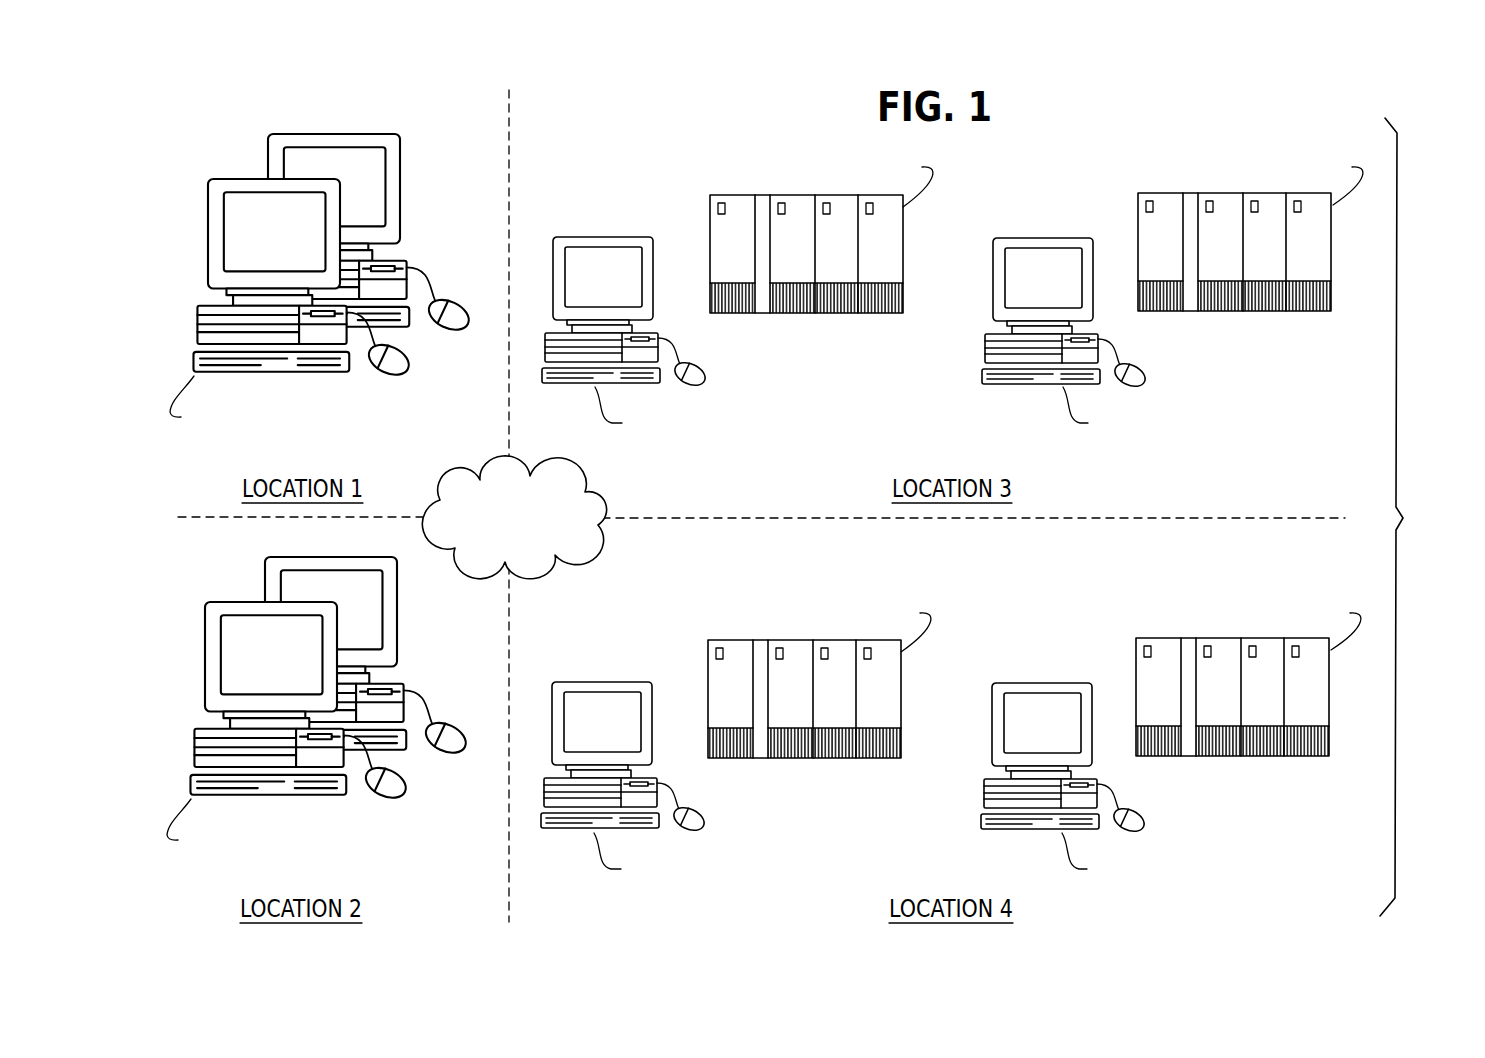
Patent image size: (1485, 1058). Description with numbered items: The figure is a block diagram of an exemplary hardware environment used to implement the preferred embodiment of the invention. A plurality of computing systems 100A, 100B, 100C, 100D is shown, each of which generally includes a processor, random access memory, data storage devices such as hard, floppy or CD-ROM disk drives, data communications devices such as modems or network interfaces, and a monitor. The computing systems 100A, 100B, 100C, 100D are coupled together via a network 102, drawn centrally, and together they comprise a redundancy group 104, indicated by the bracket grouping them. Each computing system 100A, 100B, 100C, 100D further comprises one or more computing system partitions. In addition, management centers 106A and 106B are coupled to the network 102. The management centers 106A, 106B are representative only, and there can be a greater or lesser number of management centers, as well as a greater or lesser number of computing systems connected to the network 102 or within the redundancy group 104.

The computing system 100A is at (656, 194).
The computing system 100B is at (1096, 194).
The computing system 100C is at (654, 641).
The computing system 100D is at (1094, 641).
The network 102 is at (586, 494).
The redundancy group 104 is at (1409, 517).
The management center 106A is at (246, 139).
The management center 106B is at (236, 581).